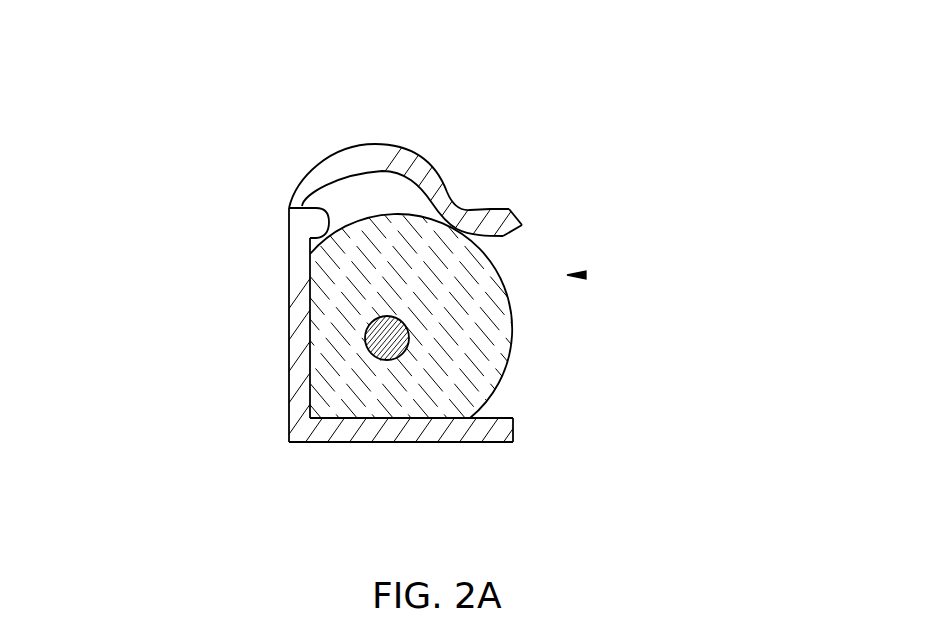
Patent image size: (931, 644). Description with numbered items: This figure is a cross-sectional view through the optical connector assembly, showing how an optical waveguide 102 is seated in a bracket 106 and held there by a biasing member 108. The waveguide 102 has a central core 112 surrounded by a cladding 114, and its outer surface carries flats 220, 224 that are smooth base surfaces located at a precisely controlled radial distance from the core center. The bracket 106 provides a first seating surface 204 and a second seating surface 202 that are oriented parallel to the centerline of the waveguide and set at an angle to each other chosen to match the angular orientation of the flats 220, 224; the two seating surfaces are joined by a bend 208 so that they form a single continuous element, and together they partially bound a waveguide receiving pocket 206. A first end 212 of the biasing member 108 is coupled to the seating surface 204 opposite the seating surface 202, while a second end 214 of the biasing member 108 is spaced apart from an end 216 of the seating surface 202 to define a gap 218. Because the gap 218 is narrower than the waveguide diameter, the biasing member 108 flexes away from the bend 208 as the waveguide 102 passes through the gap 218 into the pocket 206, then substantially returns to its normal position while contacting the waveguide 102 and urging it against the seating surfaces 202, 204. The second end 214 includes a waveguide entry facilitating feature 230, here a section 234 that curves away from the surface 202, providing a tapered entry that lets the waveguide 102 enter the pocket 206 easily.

The first optical waveguide 102 is at (402, 217).
The bracket 106 is at (270, 264).
The biasing member 108 is at (473, 192).
The core 112 is at (366, 333).
The cladding 114 is at (503, 358).
The second seating surface 202 is at (503, 418).
The first seating surface 204 is at (288, 213).
The waveguide receiving pocket 206 is at (366, 192).
The bend 208 is at (288, 442).
The first end 212 is at (290, 207).
The second end 214 is at (502, 193).
The end 216 is at (513, 420).
The gap 218 is at (582, 275).
The first flat 220 is at (401, 419).
The first flat 224 is at (308, 366).
The waveguide entry facilitating feature 230 is at (540, 234).
The section 234 is at (505, 237).